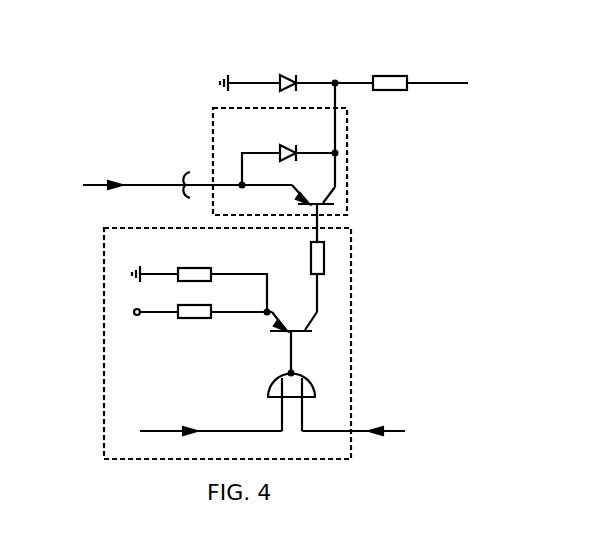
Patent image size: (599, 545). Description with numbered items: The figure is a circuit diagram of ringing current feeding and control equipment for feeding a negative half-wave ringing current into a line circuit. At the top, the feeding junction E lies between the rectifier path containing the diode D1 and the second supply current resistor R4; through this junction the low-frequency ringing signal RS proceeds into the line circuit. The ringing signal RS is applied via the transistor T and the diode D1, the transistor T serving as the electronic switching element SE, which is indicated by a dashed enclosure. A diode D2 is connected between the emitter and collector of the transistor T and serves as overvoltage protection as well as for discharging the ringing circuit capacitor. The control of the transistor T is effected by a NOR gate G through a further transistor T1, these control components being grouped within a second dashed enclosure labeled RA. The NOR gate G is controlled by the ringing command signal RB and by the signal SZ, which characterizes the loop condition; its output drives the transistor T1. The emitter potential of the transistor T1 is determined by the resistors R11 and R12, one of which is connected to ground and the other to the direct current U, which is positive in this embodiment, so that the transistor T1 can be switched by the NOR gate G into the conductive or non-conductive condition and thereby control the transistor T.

The diode D1 is at (292, 67).
The feeding junction E is at (332, 70).
The second supply current resistor R4 is at (390, 72).
The diode D2 is at (289, 154).
The electronic switching element SE is at (386, 163).
The transistor T is at (313, 203).
The ringing signal RS is at (187, 176).
The reset arrangement RA is at (83, 312).
The resistor R11 is at (199, 278).
The resistor R12 is at (206, 300).
The direct current U is at (127, 312).
The further transistor T1 is at (293, 327).
The NOR gate G is at (279, 401).
The ringing command signal RB is at (211, 419).
The signal characterizing the loop condition SZ is at (353, 419).